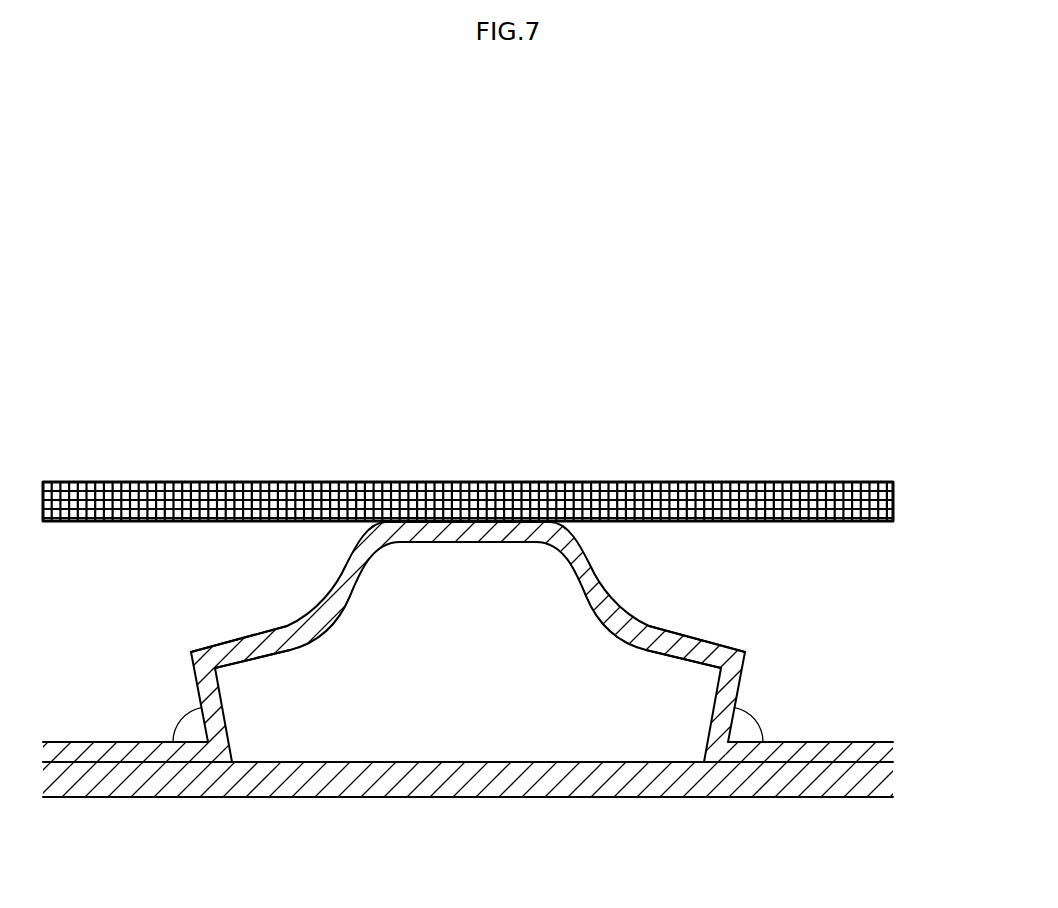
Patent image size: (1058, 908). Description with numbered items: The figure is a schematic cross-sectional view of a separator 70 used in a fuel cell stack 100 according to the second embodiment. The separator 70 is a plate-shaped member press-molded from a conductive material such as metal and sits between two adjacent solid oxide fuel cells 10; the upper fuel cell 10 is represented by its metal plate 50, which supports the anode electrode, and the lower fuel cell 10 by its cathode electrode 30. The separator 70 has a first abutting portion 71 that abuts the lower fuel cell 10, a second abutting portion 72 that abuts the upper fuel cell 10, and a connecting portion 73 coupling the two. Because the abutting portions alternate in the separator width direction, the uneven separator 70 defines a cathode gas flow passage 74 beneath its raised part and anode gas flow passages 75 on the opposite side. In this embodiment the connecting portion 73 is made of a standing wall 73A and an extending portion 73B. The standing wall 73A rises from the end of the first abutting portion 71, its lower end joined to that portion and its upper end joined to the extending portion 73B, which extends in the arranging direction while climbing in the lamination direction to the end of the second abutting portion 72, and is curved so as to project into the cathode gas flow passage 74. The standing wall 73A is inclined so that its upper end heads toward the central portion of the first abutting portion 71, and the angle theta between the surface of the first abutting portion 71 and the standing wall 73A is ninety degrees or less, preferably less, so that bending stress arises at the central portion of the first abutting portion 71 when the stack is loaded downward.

The fuel cell stack 100 is at (822, 379).
The solid oxide fuel cell 10 is at (870, 472).
The metal plate 50 is at (870, 500).
The cathode electrode 30 is at (878, 777).
The first abutting portion 71 is at (111, 750).
The separator 70 is at (287, 611).
The second abutting portion 72 is at (467, 528).
The connecting portion 73 is at (320, 677).
The standing wall 73A is at (217, 717).
The extending portion 73B is at (260, 645).
The anode gas flow passage 75 is at (83, 646).
The cathode gas flow passage 74 is at (442, 646).